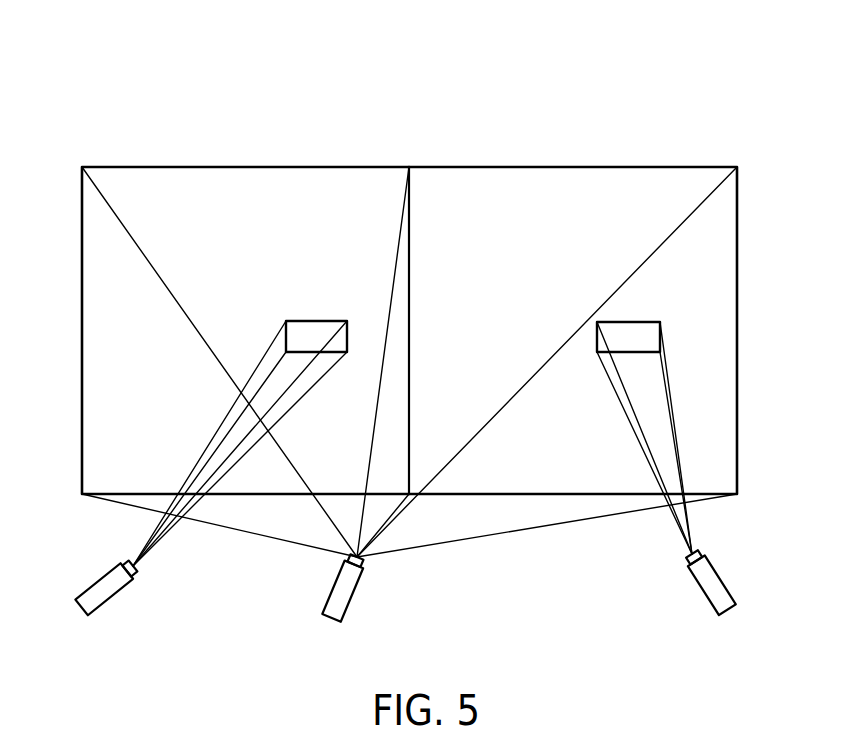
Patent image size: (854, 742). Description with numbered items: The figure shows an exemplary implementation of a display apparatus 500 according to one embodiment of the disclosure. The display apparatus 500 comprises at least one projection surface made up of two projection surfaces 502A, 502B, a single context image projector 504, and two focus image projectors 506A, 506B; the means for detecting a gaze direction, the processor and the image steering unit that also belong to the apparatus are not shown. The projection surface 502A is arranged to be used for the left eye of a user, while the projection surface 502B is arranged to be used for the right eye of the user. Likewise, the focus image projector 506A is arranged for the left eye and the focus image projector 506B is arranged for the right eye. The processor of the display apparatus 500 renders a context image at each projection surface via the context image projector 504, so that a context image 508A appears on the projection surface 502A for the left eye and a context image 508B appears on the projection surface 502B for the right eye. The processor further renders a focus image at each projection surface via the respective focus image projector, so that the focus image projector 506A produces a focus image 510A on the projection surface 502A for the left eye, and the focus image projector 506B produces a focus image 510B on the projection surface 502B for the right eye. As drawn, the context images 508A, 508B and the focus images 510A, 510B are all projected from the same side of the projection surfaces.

The display apparatus 500 is at (668, 59).
The projection surface 502A is at (245, 306).
The projection surface 502B is at (573, 306).
The context image projector 504 is at (409, 400).
The focus image projector 506A is at (195, 468).
The focus image projector 506B is at (666, 486).
The context image 508A is at (267, 238).
The context image 508B is at (605, 238).
The focus image 510A is at (434, 122).
The focus image 510B is at (797, 262).